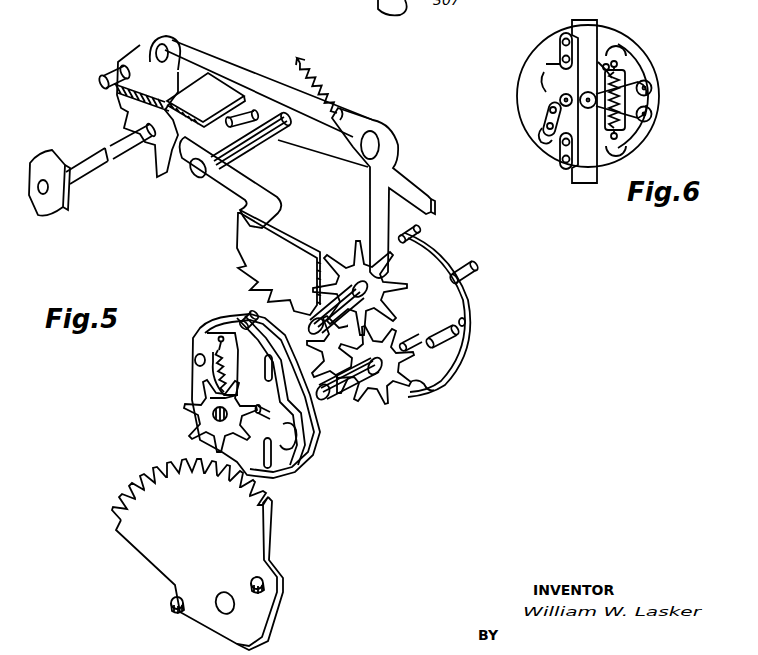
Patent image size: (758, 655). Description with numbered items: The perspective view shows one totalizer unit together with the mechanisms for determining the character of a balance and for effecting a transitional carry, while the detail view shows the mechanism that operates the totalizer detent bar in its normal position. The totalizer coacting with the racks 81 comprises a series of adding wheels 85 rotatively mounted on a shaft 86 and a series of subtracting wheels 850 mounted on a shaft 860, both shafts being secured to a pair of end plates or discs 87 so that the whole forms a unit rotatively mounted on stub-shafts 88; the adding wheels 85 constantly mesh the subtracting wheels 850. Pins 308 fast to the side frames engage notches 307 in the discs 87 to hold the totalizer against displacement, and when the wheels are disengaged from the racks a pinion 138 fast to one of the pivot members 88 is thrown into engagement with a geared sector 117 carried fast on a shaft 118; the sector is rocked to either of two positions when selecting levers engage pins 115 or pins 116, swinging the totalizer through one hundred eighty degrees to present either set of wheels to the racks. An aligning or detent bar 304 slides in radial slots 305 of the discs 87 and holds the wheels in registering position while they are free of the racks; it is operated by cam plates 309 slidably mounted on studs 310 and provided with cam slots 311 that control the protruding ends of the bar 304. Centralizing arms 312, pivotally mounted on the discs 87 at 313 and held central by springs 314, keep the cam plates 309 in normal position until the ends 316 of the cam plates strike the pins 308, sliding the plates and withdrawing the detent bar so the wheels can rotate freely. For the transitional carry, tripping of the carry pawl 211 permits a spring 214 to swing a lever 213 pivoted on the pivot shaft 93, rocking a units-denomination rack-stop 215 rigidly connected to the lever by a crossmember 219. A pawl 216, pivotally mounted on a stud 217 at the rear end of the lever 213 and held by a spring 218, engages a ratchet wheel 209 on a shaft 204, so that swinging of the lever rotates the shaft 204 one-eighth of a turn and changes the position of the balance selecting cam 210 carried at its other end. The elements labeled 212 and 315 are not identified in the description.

In FIG. 5, the balance selecting cam 210 is at (50, 162).
In FIG. 5, the shaft 204 is at (87, 176).
In FIG. 5, the ratchet wheel 209 is at (160, 166).
In FIG. 5, the pawl 216 is at (147, 52).
In FIG. 5, the stud 217 is at (171, 47).
In FIG. 5, the spring 218 is at (142, 90).
In FIG. 5, the crossmember 219 is at (232, 72).
In FIG. 5, the spring 214 is at (318, 81).
In FIG. 5, the pivot hole 212 is at (382, 133).
In FIG. 5, the pivot shaft 93 is at (233, 151).
In FIG. 5, the lever 213 is at (318, 153).
In FIG. 5, the carry pawl 211 is at (416, 185).
In FIG. 5, the units-denomination rack-stop 215 is at (281, 208).
In FIG. 5, the racks 81 is at (290, 245).
In FIG. 5, the pins 308 is at (416, 227).
In FIG. 5, the adding wheels 85 is at (394, 296).
In FIG. 5, the shaft 86 is at (335, 311).
In FIG. 5, the stub-shafts 88 is at (477, 277).
In FIG. 6, the stub-shafts 88 is at (605, 63).
In FIG. 5, the end plates 87 is at (470, 312).
In FIG. 6, the end plates 87 is at (611, 33).
In FIG. 5, the radial slots 305 is at (460, 319).
In FIG. 6, the radial slots 305 is at (540, 134).
In FIG. 5, the detent bar 304 is at (441, 344).
In FIG. 6, the detent bar 304 is at (544, 121).
In FIG. 5, the notches 307 is at (426, 389).
In FIG. 5, the subtracting wheels 850 is at (407, 398).
In FIG. 5, the shaft 860 is at (351, 404).
In FIG. 5, the centralizing arms 312 is at (203, 352).
In FIG. 6, the centralizing arms 312 is at (633, 67).
In FIG. 5, the pinion 138 is at (194, 401).
In FIG. 5, the cam plates 309 is at (295, 443).
In FIG. 6, the cam plates 309 is at (546, 64).
In FIG. 5, the geared sector 117 is at (266, 531).
In FIG. 5, the shaft 118 is at (233, 576).
In FIG. 5, the pins 116 is at (265, 589).
In FIG. 5, the pins 115 is at (170, 613).
In FIG. 6, the ends of the cam plates 316 is at (603, 18).
In FIG. 6, the studs 310 is at (562, 48).
In FIG. 6, the cam slots 311 is at (558, 101).
In FIG. 6, the pivot 315 is at (565, 97).
In FIG. 6, the pivot 313 is at (653, 88).
In FIG. 6, the springs 314 is at (622, 106).